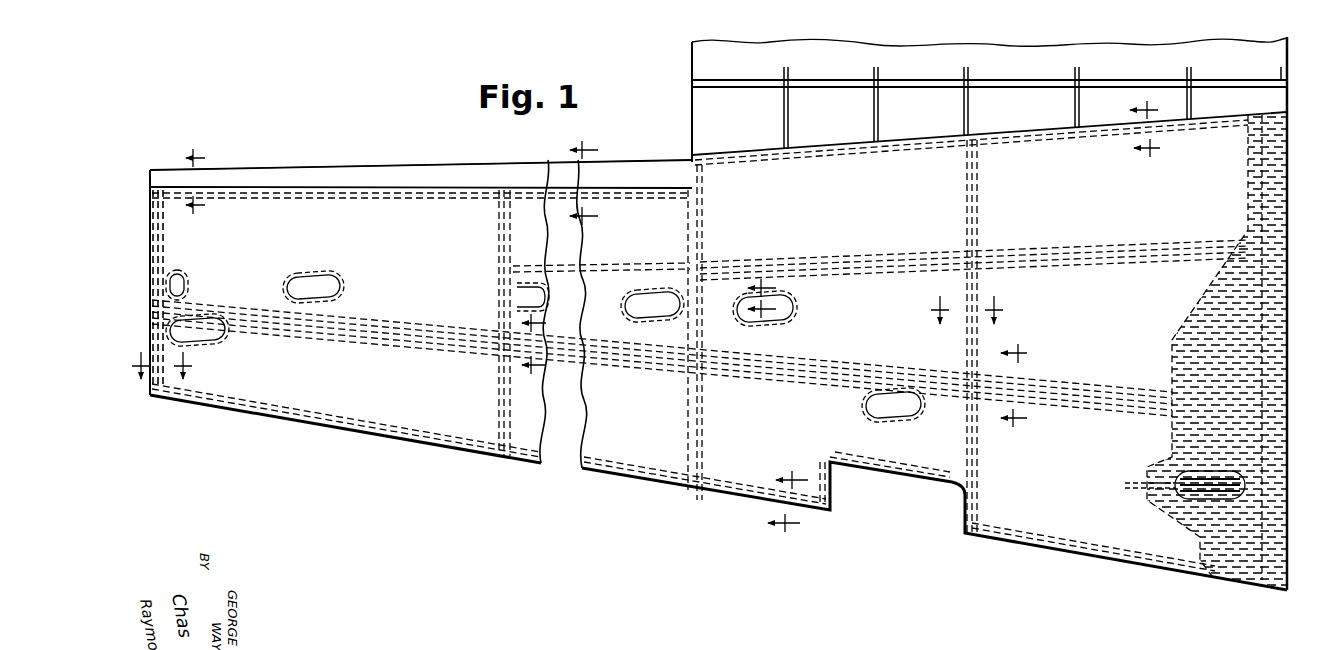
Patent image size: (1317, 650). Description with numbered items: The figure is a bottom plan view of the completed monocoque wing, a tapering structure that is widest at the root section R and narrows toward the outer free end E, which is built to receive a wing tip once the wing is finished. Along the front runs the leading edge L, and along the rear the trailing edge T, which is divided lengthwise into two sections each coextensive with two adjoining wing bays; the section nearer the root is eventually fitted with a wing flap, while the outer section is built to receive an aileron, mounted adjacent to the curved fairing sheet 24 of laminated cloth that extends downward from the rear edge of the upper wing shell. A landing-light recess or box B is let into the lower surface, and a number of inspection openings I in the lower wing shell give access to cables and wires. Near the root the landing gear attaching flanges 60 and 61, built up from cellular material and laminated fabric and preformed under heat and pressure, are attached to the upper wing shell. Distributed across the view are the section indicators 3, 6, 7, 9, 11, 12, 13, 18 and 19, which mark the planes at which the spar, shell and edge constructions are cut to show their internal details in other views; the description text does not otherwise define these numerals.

The section line 3- 3 is at (540, 341).
The section line 6- 6 is at (1134, 129).
The section line 7- 7 is at (1004, 385).
The section line 9- 9 is at (163, 376).
The section line 11- 11 is at (969, 320).
The section line 12- 12 is at (768, 304).
The section line 13- 13 is at (774, 502).
The section line 18- 18 is at (584, 183).
The section line 19- 19 is at (194, 182).
The curved fairing sheet 24 is at (394, 178).
The landing gear attaching flange 60 is at (1175, 470).
The landing gear attaching flange 61 is at (1125, 485).
The outer free end E is at (150, 205).
The trailing edge T is at (314, 183).
The inspection opening I is at (344, 283).
The root section R is at (1282, 330).
The landing-light recess B is at (962, 510).
The leading edge L is at (1042, 553).